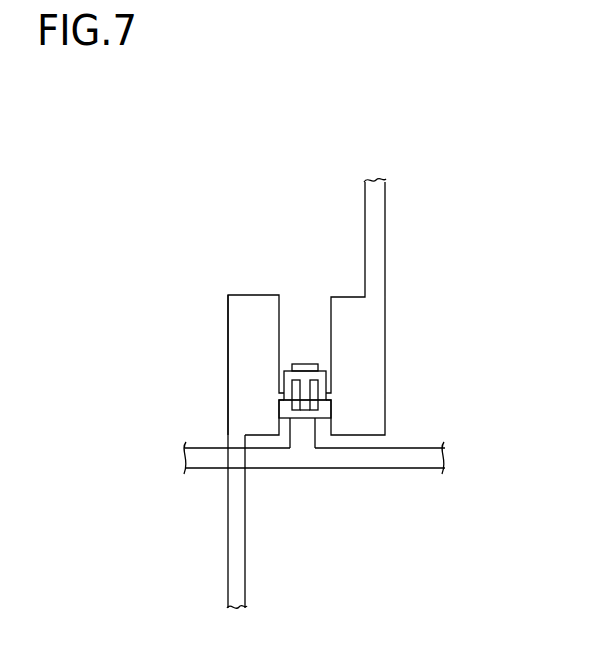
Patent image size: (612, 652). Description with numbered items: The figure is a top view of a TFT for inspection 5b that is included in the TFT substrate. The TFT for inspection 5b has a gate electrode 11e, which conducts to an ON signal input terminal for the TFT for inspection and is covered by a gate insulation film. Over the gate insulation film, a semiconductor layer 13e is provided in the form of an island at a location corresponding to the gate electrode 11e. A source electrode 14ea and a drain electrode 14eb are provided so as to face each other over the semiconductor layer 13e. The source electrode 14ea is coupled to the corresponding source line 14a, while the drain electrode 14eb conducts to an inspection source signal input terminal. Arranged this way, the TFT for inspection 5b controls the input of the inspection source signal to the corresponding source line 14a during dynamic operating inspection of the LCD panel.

The TFT for inspection 5b is at (250, 165).
The source electrode 14ea is at (252, 302).
The drain electrode 14eb is at (377, 326).
The source line 14a is at (232, 537).
The semiconductor layer 13e is at (307, 418).
The gate electrode 11e is at (298, 433).